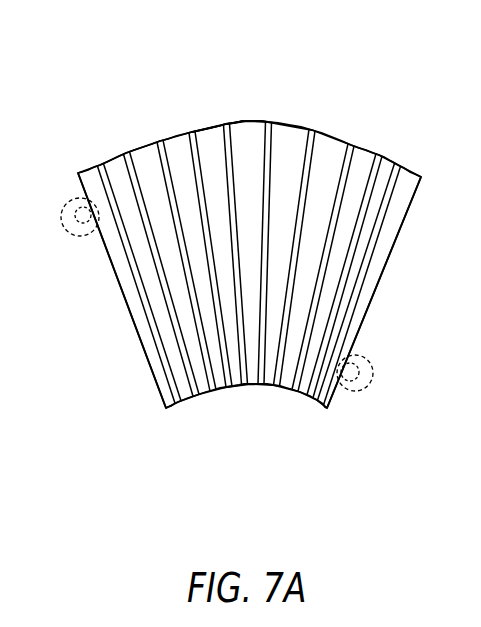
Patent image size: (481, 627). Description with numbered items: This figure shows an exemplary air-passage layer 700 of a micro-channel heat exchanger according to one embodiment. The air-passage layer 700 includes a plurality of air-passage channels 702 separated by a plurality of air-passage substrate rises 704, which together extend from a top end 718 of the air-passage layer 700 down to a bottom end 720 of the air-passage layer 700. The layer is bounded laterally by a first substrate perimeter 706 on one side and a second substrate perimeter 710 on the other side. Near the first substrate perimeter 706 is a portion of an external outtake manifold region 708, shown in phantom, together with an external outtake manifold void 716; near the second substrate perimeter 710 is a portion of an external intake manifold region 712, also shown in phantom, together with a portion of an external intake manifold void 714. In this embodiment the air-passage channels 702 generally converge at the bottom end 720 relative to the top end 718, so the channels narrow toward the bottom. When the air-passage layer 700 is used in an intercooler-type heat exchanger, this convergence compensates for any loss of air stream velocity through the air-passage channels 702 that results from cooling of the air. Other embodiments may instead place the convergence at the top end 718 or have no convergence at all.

The air-passage layer 700 is at (288, 407).
The air-passage channels 702 is at (243, 120).
The air-passage substrate rises 704 is at (378, 157).
The first substrate perimeter 706 is at (170, 397).
The external outtake manifold region 708 is at (83, 240).
The second substrate perimeter 710 is at (380, 246).
The external intake manifold region 712 is at (368, 384).
The external intake manifold void 714 is at (348, 373).
The external outtake manifold void 716 is at (87, 215).
The top end 718 is at (115, 108).
The bottom end 720 is at (267, 467).